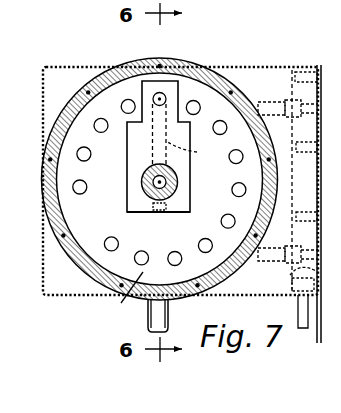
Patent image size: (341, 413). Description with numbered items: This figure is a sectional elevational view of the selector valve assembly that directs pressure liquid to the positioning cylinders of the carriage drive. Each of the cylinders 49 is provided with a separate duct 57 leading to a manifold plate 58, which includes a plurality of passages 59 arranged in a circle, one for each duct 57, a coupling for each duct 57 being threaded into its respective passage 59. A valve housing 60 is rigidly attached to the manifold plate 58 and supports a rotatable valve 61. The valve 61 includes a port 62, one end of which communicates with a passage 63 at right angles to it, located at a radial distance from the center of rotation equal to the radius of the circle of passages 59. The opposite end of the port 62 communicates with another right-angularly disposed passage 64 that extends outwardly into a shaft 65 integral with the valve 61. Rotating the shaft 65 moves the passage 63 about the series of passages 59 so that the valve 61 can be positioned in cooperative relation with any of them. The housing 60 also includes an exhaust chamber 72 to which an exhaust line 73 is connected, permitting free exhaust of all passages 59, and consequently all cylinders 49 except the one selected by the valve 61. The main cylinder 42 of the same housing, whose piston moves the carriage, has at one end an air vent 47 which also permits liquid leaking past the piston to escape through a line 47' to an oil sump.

The cylinder 42 is at (288, 247).
The air vent 47 is at (284, 279).
The line 47' is at (282, 311).
The cylinders 49 is at (307, 118).
The duct 57 is at (274, 98).
The manifold plate 58 is at (234, 77).
The passages 59 is at (121, 110).
The valve housing 60 is at (125, 63).
The rotatable valve 61 is at (132, 140).
The port 62 is at (190, 150).
The passage 63 is at (164, 104).
The passage 64 is at (166, 182).
The shaft 65 is at (143, 176).
The exhaust chamber 72 is at (121, 295).
The exhaust line 73 is at (148, 321).